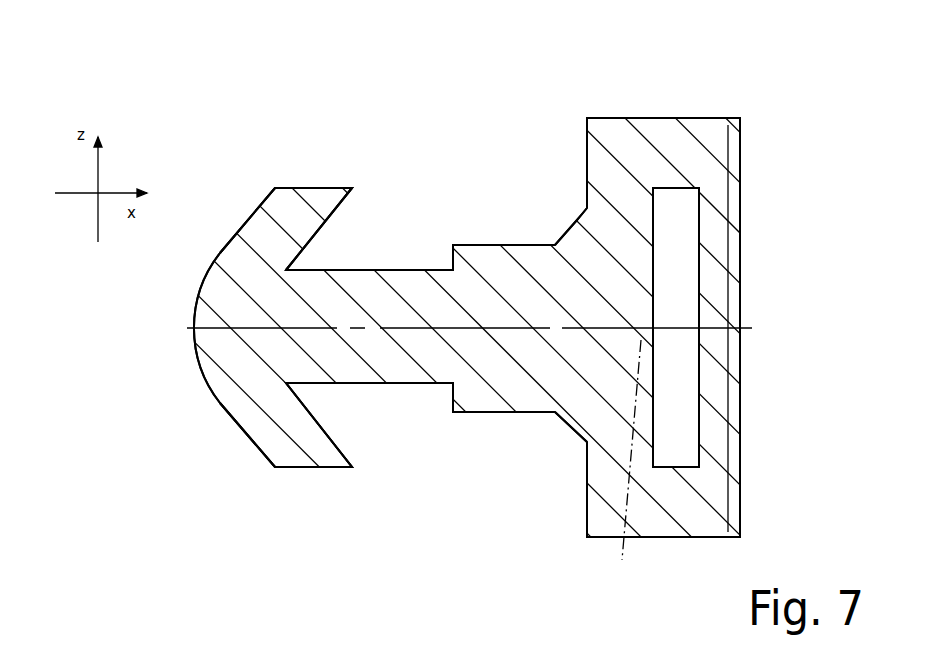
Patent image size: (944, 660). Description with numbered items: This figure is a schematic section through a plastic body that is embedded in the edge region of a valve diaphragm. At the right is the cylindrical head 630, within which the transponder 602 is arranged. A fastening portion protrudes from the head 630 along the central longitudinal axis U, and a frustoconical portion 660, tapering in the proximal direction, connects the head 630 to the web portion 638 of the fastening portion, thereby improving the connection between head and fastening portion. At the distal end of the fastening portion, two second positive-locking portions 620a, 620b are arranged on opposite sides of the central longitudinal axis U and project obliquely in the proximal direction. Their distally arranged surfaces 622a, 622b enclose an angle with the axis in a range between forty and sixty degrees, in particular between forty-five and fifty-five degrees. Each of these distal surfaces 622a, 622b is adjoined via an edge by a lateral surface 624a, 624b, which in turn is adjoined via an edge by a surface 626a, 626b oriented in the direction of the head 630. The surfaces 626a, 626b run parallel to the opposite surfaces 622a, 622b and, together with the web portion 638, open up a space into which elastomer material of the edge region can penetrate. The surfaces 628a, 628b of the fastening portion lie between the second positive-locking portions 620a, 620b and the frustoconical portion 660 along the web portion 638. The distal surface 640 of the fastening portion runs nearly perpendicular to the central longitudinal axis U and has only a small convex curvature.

The transponder 602 is at (682, 247).
The head 630 is at (624, 152).
The web portion 638 is at (428, 292).
The frustoconical portion 660 is at (573, 238).
The distal surface of the fastening portion 640 is at (187, 343).
The distally oriented surface of the second positive-locking portion 622a is at (238, 222).
The distally oriented surface of the second positive-locking portion 622b is at (237, 430).
The second positive-locking portion 620a is at (280, 210).
The second positive-locking portion 620b is at (292, 452).
The lateral surface 624a is at (320, 182).
The lateral surface 624b is at (328, 472).
The surface oriented toward the head 626a is at (337, 238).
The surface oriented toward the head 626b is at (344, 428).
The upper shaft surface 628a is at (405, 200).
The lower shaft surface 628b is at (403, 437).
The central longitudinal axis U is at (624, 468).